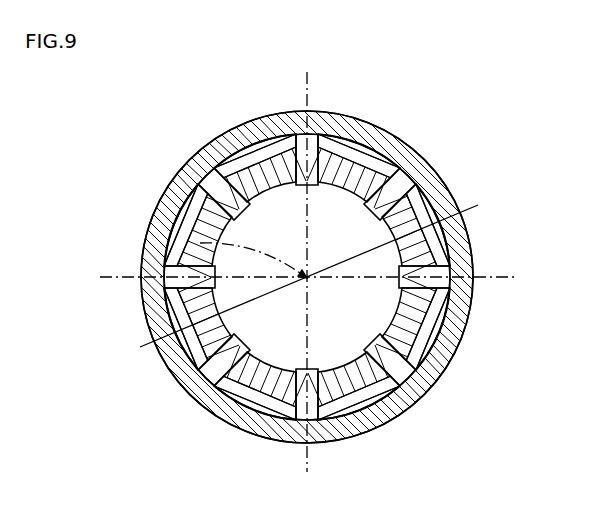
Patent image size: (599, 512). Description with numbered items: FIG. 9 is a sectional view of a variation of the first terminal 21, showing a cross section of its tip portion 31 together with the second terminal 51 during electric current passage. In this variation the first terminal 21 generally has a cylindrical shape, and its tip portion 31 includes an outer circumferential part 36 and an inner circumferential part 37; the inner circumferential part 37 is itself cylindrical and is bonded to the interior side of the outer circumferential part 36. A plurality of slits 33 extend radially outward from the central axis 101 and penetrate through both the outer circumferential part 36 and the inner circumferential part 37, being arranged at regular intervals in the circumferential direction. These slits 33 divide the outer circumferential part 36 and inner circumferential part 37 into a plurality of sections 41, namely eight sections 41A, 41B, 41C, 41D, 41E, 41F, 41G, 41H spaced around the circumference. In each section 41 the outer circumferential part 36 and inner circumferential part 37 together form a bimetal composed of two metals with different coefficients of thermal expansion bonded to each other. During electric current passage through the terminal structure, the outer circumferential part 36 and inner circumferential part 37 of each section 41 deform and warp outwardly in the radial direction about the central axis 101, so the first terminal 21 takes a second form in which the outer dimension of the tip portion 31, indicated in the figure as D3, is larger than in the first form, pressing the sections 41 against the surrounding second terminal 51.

The first terminal 21 is at (400, 418).
The tip portion 31 is at (398, 146).
The slits 33 is at (207, 382).
The outer circumferential part 36 is at (440, 308).
The inner circumferential part 37 is at (443, 352).
The sections 41 is at (308, 279).
The section 41A is at (367, 145).
The section 41B is at (443, 242).
The section 41C is at (447, 332).
The section 41D is at (363, 412).
The section 41E is at (250, 420).
The section 41F is at (177, 311).
The section 41G is at (180, 213).
The section 41H is at (253, 138).
The second terminal 51 is at (189, 143).
The central axis 101 is at (200, 243).
The reference line D3 is at (447, 216).